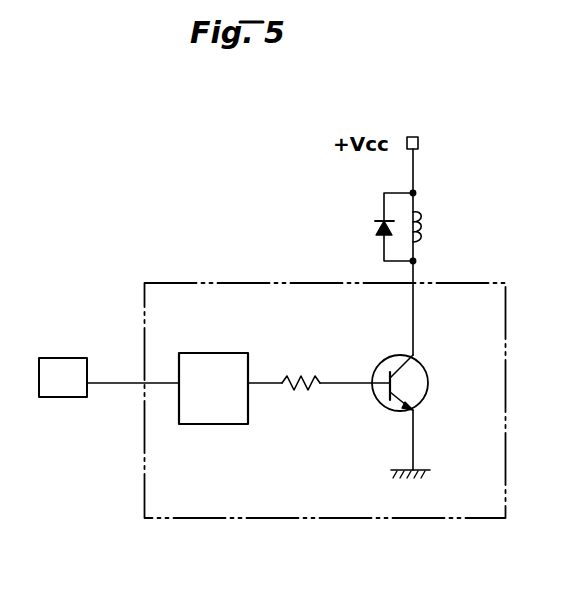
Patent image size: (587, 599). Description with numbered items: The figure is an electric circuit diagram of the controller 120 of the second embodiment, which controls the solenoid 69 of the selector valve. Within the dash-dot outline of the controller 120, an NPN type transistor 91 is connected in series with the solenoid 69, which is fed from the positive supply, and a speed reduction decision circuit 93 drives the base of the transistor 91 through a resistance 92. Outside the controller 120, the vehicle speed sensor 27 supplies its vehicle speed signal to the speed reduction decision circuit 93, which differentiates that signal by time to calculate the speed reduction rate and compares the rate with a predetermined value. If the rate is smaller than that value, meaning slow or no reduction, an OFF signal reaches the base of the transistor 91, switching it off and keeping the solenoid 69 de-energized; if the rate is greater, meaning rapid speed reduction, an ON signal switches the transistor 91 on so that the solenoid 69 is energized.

The vehicle speed sensor 27 is at (68, 366).
The solenoid 69 is at (420, 233).
The NPN type transistor 91 is at (428, 383).
The resistance 92 is at (311, 375).
The speed reduction decision circuit 93 is at (230, 399).
The controller 120 is at (193, 282).